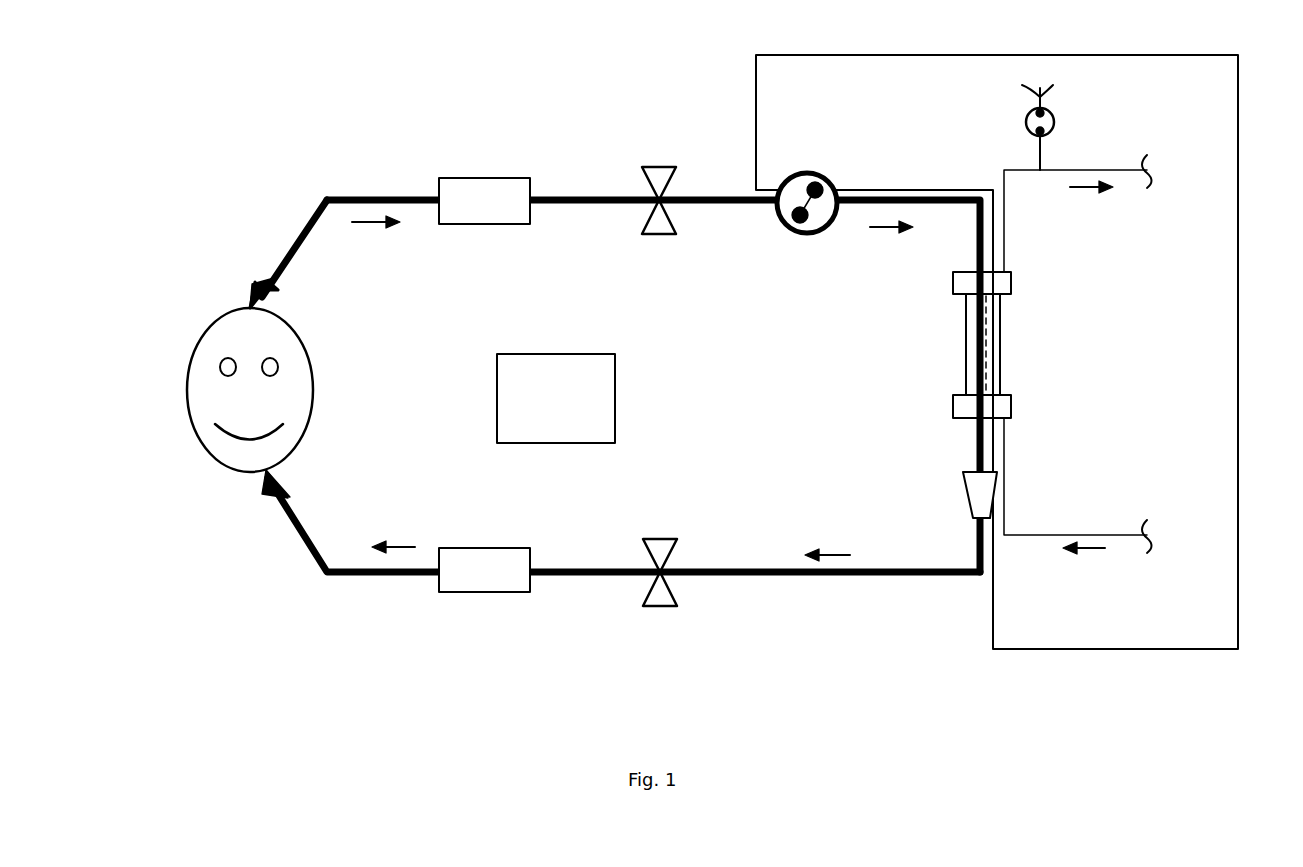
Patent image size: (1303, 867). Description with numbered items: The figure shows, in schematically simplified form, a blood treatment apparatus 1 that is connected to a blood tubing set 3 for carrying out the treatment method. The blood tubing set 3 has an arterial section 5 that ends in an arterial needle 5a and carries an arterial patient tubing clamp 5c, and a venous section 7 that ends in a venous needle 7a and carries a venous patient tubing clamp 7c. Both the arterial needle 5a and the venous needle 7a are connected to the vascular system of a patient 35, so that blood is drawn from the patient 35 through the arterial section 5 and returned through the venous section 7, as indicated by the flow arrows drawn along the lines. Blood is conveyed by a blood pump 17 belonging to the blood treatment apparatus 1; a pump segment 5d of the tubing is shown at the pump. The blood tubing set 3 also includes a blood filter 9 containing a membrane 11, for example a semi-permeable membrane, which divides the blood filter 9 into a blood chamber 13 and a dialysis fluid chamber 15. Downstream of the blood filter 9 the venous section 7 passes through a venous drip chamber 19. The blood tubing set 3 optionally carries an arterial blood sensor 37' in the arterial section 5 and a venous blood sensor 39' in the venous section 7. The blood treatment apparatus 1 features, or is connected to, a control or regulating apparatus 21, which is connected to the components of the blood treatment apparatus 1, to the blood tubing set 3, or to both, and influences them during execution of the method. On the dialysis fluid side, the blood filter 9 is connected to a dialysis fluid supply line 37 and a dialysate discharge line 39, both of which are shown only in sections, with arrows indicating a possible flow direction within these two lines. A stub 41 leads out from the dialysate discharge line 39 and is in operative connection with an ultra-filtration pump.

The blood treatment apparatus 1 is at (838, 105).
The blood tubing set 3 is at (694, 407).
The arterial section 5 is at (603, 195).
The arterial needle 5a is at (265, 290).
The arterial patient tubing clamp 5c is at (660, 177).
The pump segment 5d is at (815, 233).
The venous section 7 is at (888, 578).
The venous needle 7a is at (268, 478).
The venous patient tubing clamp 7c is at (660, 596).
The blood filter 9 is at (1003, 286).
The membrane 11 is at (986, 350).
The blood chamber 13 is at (971, 313).
The dialysis fluid chamber 15 is at (995, 381).
The blood pump 17 is at (832, 188).
The venous drip chamber 19 is at (983, 499).
The control or regulating apparatus 21 is at (568, 407).
The patient 35 is at (228, 450).
The dialysis fluid supply line 37 is at (1093, 486).
The arterial blood sensor 37' is at (445, 235).
The dialysate discharge line 39 is at (1102, 188).
The venous blood sensor 39' is at (517, 547).
The stub 41 is at (1027, 115).